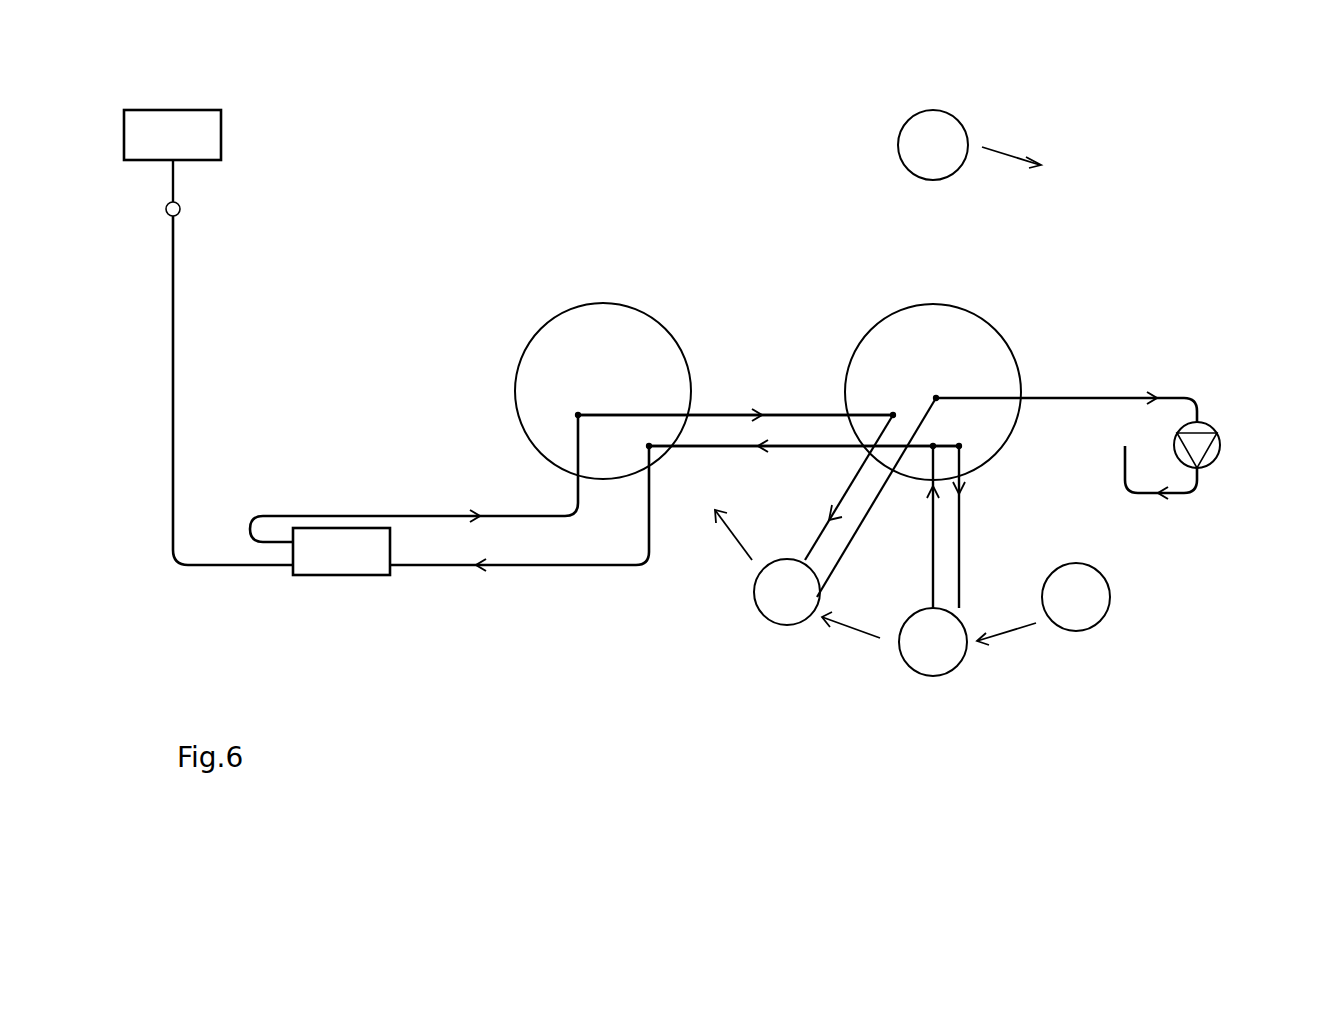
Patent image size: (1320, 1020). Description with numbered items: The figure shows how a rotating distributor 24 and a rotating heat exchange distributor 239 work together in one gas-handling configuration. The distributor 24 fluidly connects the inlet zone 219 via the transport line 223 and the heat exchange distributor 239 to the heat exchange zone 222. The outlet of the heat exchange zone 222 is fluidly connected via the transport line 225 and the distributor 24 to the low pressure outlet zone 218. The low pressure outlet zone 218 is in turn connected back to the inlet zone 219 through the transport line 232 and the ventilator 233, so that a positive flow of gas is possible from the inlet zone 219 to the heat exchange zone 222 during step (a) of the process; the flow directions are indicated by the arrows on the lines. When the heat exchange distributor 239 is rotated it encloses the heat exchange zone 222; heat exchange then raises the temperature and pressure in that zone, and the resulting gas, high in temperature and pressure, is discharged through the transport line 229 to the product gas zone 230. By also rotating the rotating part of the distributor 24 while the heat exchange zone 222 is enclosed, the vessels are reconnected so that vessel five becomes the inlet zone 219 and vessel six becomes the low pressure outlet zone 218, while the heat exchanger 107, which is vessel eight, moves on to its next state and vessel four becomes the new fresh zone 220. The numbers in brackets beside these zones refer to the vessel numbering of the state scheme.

The product gas zone 230 is at (172, 135).
The transport line 229 is at (180, 205).
The heat exchange zone 222 is at (604, 495).
The heat exchange distributor 239 is at (657, 322).
The transport line 225 is at (713, 412).
The transport line 223 is at (710, 450).
The distributor 24 is at (1007, 343).
The transport line 232 is at (1200, 400).
The ventilator 233 is at (1220, 450).
The heat exchanger 107 is at (958, 120).
The low pressure outlet zone 218 is at (755, 610).
The inlet zone 219 is at (935, 676).
The fresh zone 220 is at (1103, 612).